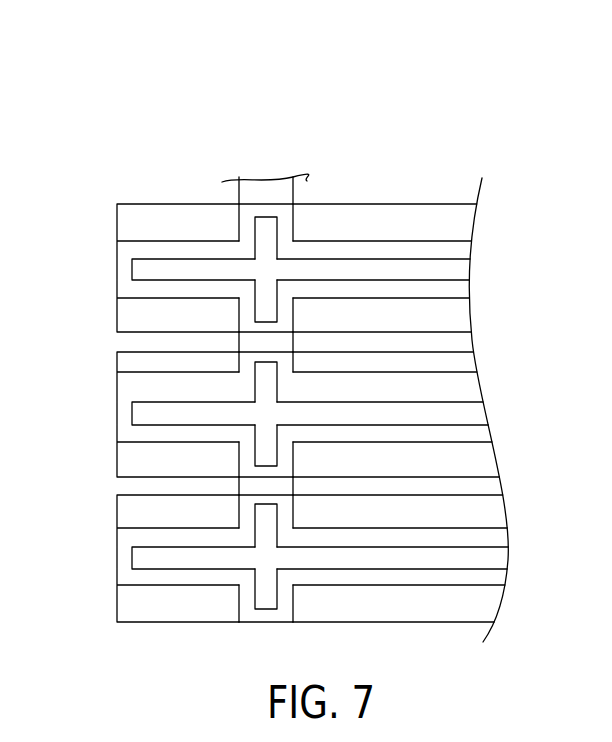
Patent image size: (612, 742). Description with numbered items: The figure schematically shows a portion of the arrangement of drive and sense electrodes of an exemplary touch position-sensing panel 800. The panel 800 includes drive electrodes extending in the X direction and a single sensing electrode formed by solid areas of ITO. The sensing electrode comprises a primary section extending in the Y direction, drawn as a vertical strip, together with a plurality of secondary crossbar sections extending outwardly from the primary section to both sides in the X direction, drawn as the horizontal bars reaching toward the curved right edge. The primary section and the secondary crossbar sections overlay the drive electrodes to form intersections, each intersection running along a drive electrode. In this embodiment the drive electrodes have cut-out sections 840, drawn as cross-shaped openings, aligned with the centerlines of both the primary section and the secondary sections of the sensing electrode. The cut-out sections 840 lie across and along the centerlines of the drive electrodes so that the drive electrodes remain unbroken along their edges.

The touch position-sensing panel 800 is at (401, 84).
The cut-out section 840 is at (270, 268).